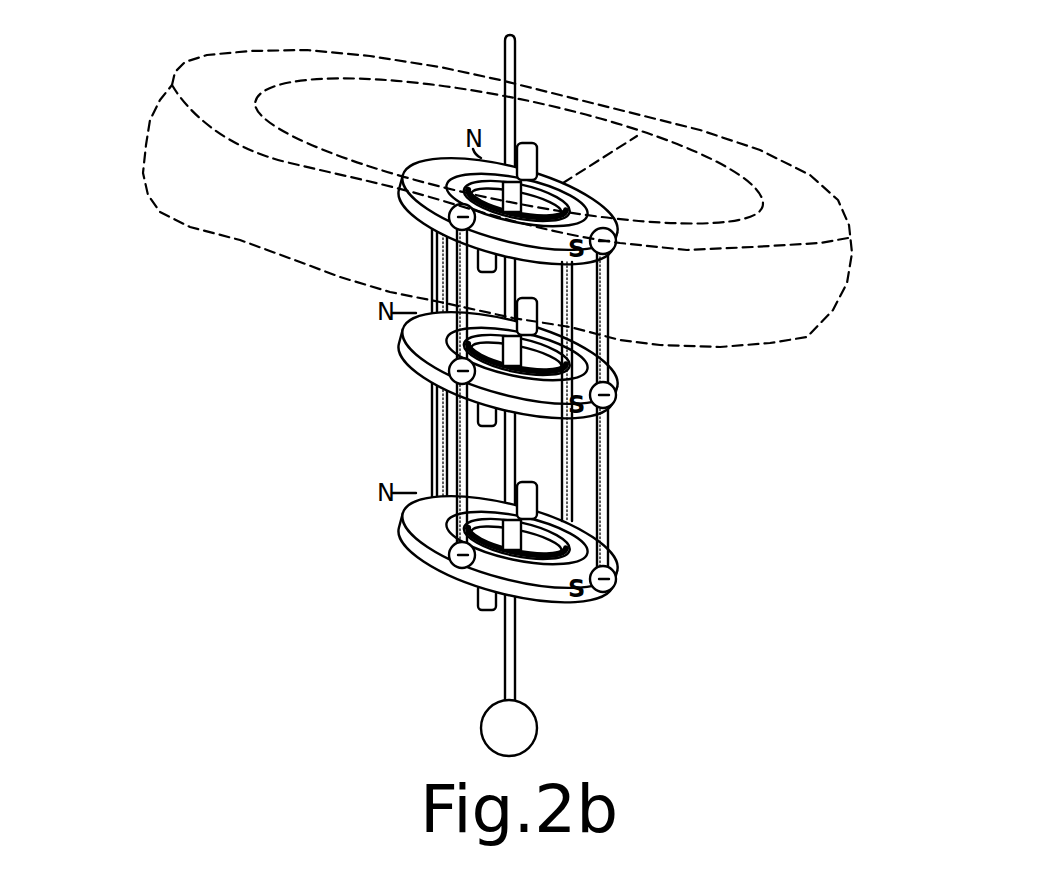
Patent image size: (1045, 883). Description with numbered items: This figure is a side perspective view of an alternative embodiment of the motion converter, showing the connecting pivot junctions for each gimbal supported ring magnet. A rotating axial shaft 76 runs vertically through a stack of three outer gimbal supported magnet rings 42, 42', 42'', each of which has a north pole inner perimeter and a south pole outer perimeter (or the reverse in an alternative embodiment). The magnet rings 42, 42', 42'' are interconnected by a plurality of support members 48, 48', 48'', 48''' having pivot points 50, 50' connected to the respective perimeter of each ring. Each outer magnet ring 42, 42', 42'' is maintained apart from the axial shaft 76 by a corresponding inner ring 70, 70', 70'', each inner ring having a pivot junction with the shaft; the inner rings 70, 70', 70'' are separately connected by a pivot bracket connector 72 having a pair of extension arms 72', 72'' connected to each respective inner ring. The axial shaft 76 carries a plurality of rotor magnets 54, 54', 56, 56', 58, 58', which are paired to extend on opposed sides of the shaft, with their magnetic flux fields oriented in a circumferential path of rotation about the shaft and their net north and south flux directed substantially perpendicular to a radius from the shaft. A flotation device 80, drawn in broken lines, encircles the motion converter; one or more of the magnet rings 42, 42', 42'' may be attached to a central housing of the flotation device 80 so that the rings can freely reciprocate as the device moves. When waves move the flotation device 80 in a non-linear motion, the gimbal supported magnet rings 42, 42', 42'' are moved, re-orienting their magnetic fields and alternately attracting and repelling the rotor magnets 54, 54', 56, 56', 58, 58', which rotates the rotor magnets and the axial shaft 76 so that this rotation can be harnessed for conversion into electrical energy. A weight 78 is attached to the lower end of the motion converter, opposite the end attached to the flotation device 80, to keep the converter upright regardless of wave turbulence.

The gimbal supported magnet ring 42 is at (483, 204).
The gimbal supported magnet ring 42' is at (482, 358).
The gimbal supported magnet ring 42'' is at (479, 542).
The support member 48 is at (640, 410).
The support member 48' is at (421, 386).
The support member 48'' is at (395, 361).
The support member 48''' is at (617, 391).
The pivot point 50 is at (653, 419).
The pivot point 50' is at (406, 398).
The rotor magnet 54 is at (562, 160).
The rotor magnet 54' is at (505, 309).
The rotor magnet 56 is at (518, 265).
The rotor magnet 56' is at (438, 424).
The rotor magnet 58 is at (590, 498).
The rotor magnet 58' is at (453, 604).
The inner ring 70 is at (528, 229).
The inner ring 70' is at (527, 391).
The inner ring 70'' is at (536, 567).
The pivot bracket connector 72 is at (538, 200).
The extension arm 72' is at (560, 354).
The extension arm 72'' is at (568, 538).
The axial shaft 76 is at (516, 36).
The weight 78 is at (528, 717).
The flotation device 80 is at (798, 178).